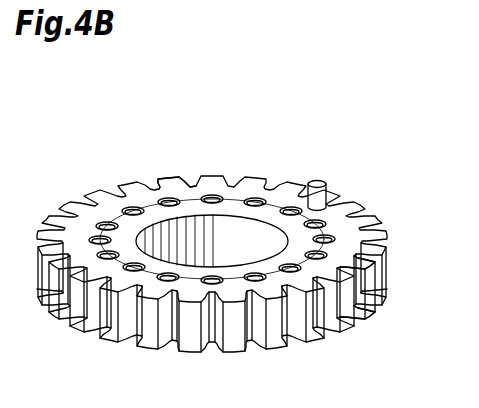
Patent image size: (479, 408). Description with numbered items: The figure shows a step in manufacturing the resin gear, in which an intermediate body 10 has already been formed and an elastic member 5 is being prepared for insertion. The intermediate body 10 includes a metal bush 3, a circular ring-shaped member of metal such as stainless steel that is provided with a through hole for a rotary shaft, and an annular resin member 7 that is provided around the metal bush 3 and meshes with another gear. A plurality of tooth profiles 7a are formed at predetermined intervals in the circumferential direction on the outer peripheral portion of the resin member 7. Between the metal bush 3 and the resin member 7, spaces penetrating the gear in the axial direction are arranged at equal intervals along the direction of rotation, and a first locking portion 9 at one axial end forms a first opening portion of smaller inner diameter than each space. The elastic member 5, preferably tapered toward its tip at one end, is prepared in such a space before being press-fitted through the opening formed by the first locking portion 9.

The intermediate body 10 is at (103, 153).
The metal bush 3 is at (242, 190).
The resin member 7 is at (180, 188).
The tooth profile 7a is at (387, 268).
The elastic member 5 is at (318, 178).
The first locking portion 9 is at (343, 227).